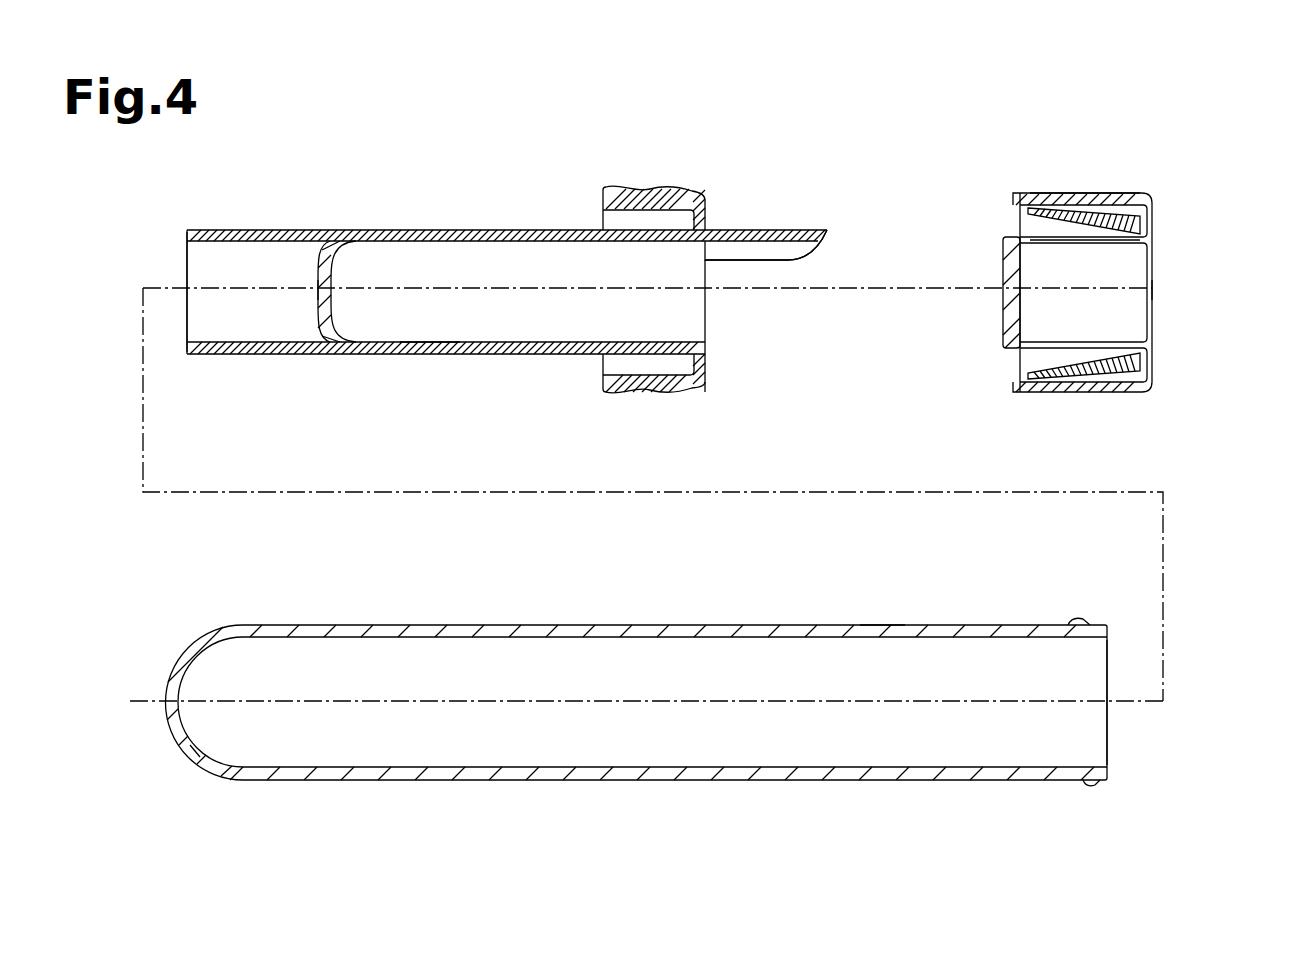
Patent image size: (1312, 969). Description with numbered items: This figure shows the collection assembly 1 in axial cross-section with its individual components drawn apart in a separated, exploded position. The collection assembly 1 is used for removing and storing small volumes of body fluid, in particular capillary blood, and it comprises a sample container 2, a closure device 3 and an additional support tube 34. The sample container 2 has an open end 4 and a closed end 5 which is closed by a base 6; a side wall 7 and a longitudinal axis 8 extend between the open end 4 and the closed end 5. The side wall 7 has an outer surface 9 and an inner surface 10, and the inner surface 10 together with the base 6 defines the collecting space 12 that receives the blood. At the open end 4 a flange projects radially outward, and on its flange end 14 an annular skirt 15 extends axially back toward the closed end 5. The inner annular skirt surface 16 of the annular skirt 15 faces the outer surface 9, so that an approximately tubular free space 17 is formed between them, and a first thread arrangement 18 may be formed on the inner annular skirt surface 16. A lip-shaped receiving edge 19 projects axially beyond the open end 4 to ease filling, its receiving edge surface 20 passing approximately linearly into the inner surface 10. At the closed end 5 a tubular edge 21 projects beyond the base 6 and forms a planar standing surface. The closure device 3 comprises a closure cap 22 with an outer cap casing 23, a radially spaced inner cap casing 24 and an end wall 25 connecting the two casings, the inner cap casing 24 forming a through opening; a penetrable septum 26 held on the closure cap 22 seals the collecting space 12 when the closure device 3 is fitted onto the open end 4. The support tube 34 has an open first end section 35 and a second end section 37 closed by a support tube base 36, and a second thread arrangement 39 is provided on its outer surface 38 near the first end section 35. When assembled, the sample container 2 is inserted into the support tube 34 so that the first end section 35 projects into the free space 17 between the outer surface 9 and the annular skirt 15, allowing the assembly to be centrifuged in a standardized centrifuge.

The collection assembly 1 is at (1203, 146).
The sample container 2 is at (440, 192).
The closure device 3 is at (1168, 202).
The open end 4 is at (718, 337).
The closed end 5 is at (318, 327).
The base 6 is at (320, 290).
The side wall 7 is at (408, 231).
The longitudinal axis 8 is at (175, 290).
The outer surface 9 is at (380, 354).
The inner surface 10 is at (492, 334).
The collecting space 12 is at (422, 320).
The flange end 14 is at (706, 226).
The annular skirt 15 is at (635, 188).
The inner annular skirt surface 16 is at (598, 372).
The free space 17 is at (604, 363).
The first thread arrangement 18 is at (615, 215).
The receiving edge 19 is at (782, 231).
The receiving edge surface 20 is at (745, 242).
The tubular edge 21 is at (232, 355).
The closure cap 22 is at (1085, 180).
The outer cap casing 23 is at (1057, 194).
The inner cap casing 24 is at (1112, 248).
The end wall 25 is at (1150, 358).
The septum 26 is at (1003, 258).
The support tube 34 is at (652, 780).
The open first end section 35 is at (1120, 764).
The support tube base 36 is at (178, 665).
The second end section 37 is at (178, 768).
The outer surface 38 is at (882, 625).
The second thread arrangement 39 is at (1070, 620).